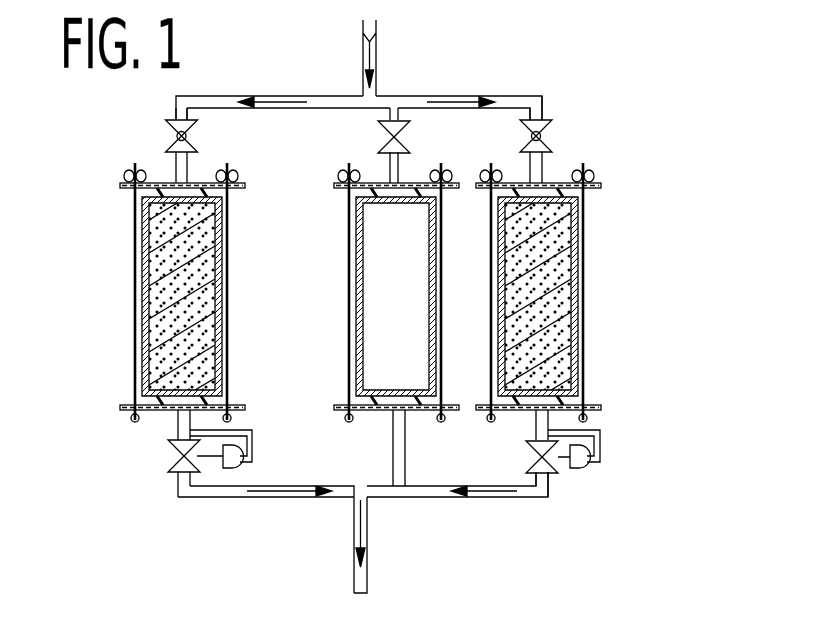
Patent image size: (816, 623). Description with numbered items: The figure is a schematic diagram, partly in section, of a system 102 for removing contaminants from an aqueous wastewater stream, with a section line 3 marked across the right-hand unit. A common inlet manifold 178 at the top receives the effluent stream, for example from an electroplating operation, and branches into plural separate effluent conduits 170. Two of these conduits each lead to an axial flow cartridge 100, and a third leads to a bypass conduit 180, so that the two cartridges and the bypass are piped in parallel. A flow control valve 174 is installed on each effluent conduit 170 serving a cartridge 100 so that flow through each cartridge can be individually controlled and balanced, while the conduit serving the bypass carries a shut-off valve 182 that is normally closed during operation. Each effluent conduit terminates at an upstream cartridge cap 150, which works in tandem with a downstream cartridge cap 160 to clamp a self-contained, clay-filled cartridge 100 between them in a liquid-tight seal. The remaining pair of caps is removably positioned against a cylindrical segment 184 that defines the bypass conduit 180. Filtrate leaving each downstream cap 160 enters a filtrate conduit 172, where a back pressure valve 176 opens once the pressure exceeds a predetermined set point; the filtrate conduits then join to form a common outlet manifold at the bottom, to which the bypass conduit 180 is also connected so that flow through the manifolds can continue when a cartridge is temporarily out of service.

The section line 3- 3 is at (512, 151).
The axial flow cartridge 100 is at (130, 298).
The system 102 is at (613, 318).
The upstream cartridge cap 150 is at (158, 183).
The downstream cartridge cap 160 is at (147, 420).
The effluent conduit 170 is at (187, 168).
The filtrate conduit 172 is at (192, 426).
The flow control valve 174 is at (185, 136).
The back pressure valve 176 is at (170, 457).
The common inlet manifold 178 is at (378, 60).
The bypass conduit 180 is at (363, 292).
The shut-off valve 182 is at (383, 132).
The cylindrical segment 184 is at (362, 340).